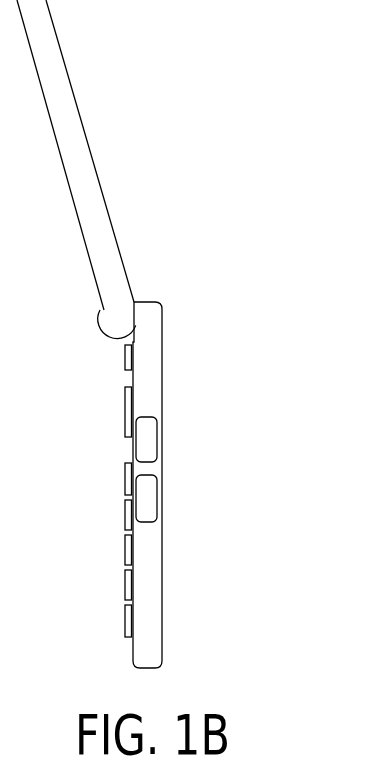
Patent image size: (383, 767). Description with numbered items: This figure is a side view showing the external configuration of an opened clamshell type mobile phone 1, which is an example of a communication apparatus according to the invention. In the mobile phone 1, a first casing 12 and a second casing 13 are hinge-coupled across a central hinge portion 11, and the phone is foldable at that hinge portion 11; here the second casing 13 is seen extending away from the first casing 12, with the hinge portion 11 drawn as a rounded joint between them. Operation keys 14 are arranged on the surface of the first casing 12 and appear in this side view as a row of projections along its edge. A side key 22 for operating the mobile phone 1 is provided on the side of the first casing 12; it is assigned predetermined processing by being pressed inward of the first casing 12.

The mobile phone 1 is at (125, 334).
The hinge portion 11 is at (115, 322).
The first casing 12 is at (162, 398).
The second casing 13 is at (90, 152).
The operation keys 14 is at (118, 347).
The side key 22 is at (149, 499).